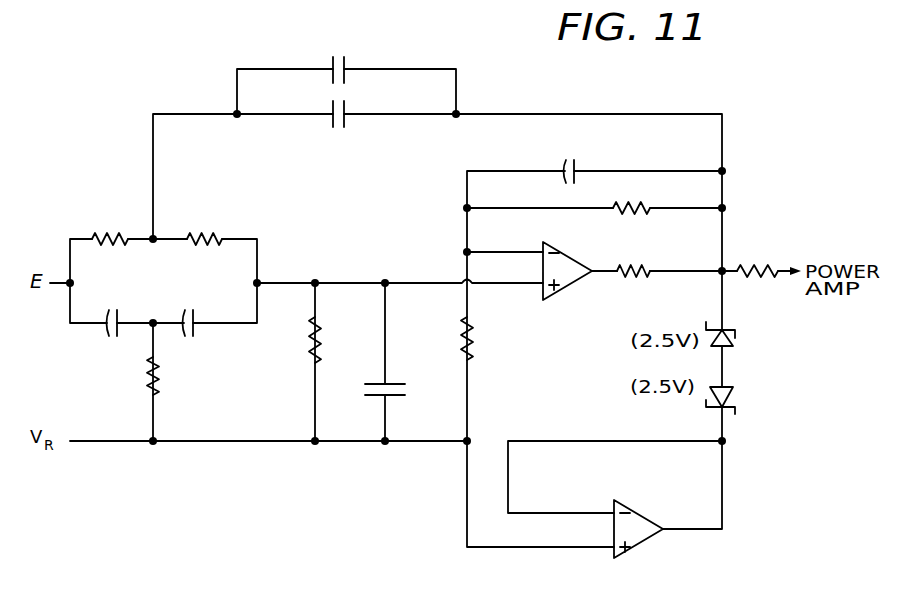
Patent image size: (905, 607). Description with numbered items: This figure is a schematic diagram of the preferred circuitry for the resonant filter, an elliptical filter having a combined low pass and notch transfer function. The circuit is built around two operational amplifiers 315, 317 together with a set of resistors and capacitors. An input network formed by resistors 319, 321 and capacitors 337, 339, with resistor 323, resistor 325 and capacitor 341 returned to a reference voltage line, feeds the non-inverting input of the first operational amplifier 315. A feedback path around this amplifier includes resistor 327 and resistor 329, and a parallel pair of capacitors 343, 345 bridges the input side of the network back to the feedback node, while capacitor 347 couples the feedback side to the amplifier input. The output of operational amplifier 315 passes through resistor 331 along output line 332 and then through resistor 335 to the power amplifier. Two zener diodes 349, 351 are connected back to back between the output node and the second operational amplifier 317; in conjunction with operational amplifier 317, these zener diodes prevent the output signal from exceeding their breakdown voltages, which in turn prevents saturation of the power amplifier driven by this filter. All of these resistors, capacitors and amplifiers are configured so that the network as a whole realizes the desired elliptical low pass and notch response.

The operational amplifier 315 is at (577, 286).
The operational amplifier 317 is at (633, 548).
The resistor 319 is at (110, 236).
The resistor 321 is at (193, 236).
The resistor 323 is at (160, 378).
The resistor 325 is at (316, 332).
The resistor 327 is at (468, 327).
The resistor 329 is at (628, 202).
The resistor 331 is at (638, 275).
The output line 332 is at (657, 257).
The resistor 335 is at (750, 276).
The capacitor 337 is at (134, 290).
The capacitor 339 is at (195, 330).
The capacitor 341 is at (386, 384).
The capacitor 343 is at (346, 106).
The capacitor 345 is at (333, 70).
The capacitor 347 is at (565, 182).
The zener diode 349 is at (732, 345).
The zener diode 351 is at (730, 395).